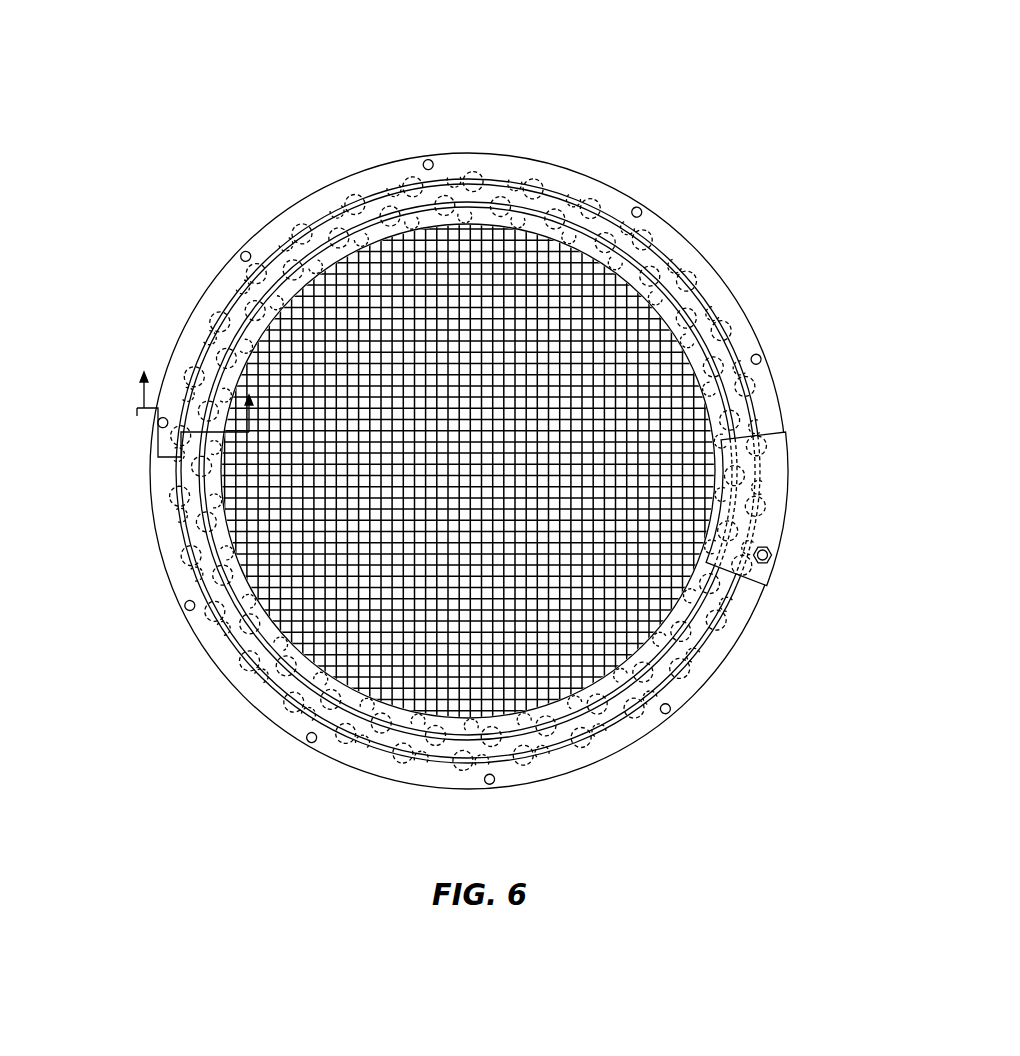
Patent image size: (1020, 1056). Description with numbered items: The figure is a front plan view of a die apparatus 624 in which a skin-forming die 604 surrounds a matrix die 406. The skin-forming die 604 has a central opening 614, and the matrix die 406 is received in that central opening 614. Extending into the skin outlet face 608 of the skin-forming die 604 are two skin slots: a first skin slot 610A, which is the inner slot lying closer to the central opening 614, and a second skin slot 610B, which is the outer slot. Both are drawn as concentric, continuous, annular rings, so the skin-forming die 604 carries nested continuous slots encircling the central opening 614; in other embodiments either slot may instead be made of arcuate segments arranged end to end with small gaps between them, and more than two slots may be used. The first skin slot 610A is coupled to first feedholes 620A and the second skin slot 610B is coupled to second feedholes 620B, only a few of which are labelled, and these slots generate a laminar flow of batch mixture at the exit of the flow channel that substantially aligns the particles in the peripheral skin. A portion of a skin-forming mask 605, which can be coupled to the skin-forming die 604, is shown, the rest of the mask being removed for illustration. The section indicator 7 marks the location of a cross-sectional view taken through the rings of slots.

The die apparatus 624 is at (435, 402).
The skin-forming die 604 is at (258, 220).
The skin outlet face 608 is at (203, 310).
The second skin slot 610B is at (595, 194).
The first skin slot 610A is at (653, 261).
The matrix die 406 is at (678, 315).
The central opening 614 is at (700, 394).
The skin-forming mask 605 is at (778, 493).
The first feedholes 620A is at (358, 198).
The second feedholes 620B is at (393, 178).
The section line 7- 7 is at (202, 412).